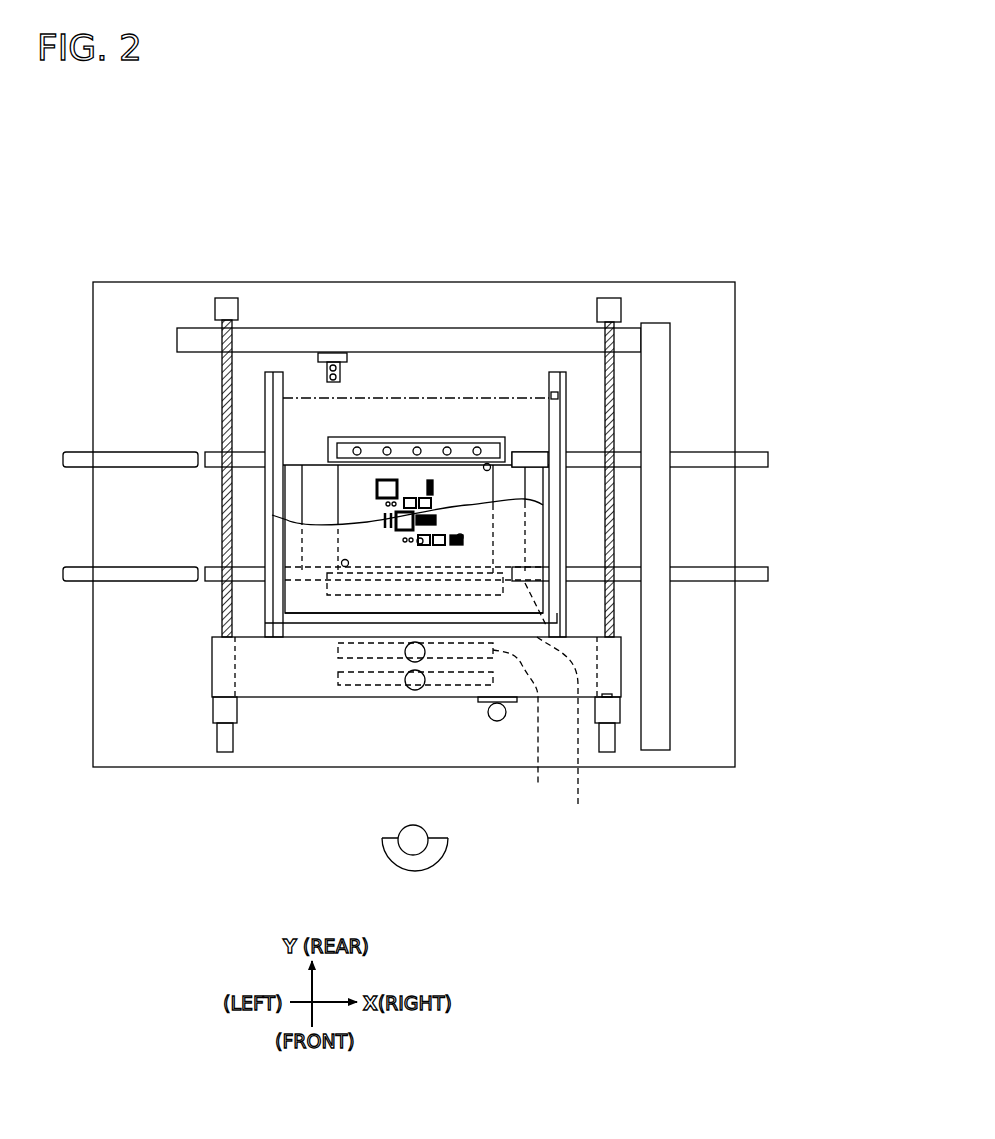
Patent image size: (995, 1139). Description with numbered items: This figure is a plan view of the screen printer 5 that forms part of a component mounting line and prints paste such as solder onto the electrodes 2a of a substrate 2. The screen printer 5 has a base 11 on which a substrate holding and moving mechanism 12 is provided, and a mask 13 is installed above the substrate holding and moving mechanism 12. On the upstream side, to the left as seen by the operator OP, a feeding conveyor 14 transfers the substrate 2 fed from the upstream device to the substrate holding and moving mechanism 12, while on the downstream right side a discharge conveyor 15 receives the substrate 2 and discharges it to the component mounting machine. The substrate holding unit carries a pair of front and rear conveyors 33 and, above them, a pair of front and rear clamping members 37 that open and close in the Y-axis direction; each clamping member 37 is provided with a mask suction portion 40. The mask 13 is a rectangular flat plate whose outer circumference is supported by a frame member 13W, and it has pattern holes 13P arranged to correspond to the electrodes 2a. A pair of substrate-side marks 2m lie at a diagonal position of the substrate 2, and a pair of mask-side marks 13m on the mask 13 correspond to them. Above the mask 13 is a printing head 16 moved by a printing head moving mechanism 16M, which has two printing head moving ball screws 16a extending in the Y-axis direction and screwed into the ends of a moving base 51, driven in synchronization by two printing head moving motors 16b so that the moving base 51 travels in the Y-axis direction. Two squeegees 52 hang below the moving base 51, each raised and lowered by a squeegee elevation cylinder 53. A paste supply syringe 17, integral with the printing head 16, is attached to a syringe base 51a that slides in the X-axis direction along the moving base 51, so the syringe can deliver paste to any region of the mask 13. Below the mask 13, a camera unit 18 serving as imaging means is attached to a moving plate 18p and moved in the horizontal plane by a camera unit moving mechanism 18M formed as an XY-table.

The screen printer 5 is at (424, 160).
The base 11 is at (150, 757).
The substrate holding and moving mechanism 12 is at (526, 502).
The mask 13 is at (293, 600).
The frame member 13W is at (550, 612).
The mask-side marks 13m is at (318, 725).
The pattern holes 13P is at (460, 540).
The feeding conveyor 14 is at (141, 516).
The discharge conveyor 15 is at (663, 516).
The substrate 2 is at (460, 470).
The electrodes 2a is at (422, 499).
The substrate-side marks 2m is at (487, 463).
The printing head 16 is at (352, 704).
The printing head moving ball screws 16a is at (223, 377).
The printing head moving motors 16b is at (225, 742).
The printing head moving mechanism 16M is at (622, 733).
The paste supply syringe 17 is at (502, 719).
The camera unit 18 is at (490, 481).
The moving plate 18p is at (330, 353).
The camera unit moving mechanism 18M is at (690, 328).
The conveyors 33 is at (503, 595).
The clamping members 37 is at (323, 619).
The mask suction portion 40 is at (427, 455).
The moving base 51 is at (285, 690).
The syringe base 51a is at (483, 702).
The squeegees 52 is at (526, 731).
The squeegee elevation cylinder 53 is at (388, 728).
The operator OP is at (426, 862).